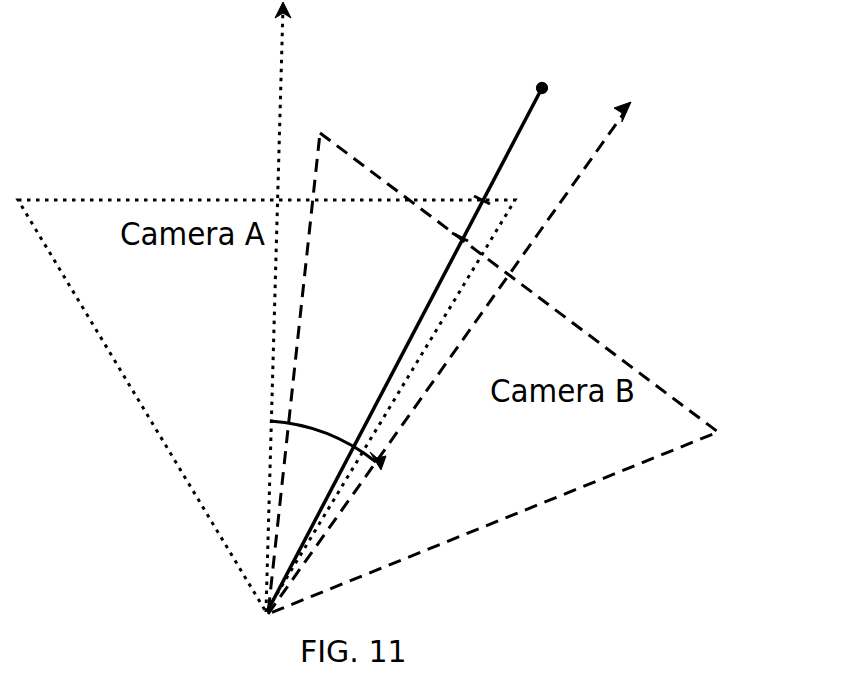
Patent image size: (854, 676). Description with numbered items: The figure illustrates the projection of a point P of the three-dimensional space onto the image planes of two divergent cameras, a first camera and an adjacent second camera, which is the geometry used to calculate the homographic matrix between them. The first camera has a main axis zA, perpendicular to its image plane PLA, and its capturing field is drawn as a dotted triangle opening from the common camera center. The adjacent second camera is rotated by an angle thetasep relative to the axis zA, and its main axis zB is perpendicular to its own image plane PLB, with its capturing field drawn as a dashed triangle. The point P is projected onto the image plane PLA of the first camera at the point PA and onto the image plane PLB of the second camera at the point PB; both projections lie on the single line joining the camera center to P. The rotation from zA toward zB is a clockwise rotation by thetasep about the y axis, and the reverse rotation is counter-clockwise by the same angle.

The image plane of camera A PLA is at (40, 198).
The image plane of camera B PLB is at (648, 380).
The main axis of camera A zA is at (258, 307).
The main axis of camera B zB is at (471, 353).
The point of the 3D space P is at (422, 331).
The projection of point P in image plane of camera A PA is at (463, 178).
The projection of point P in image plane of camera B PB is at (437, 244).
The separation angle thetasep is at (328, 427).